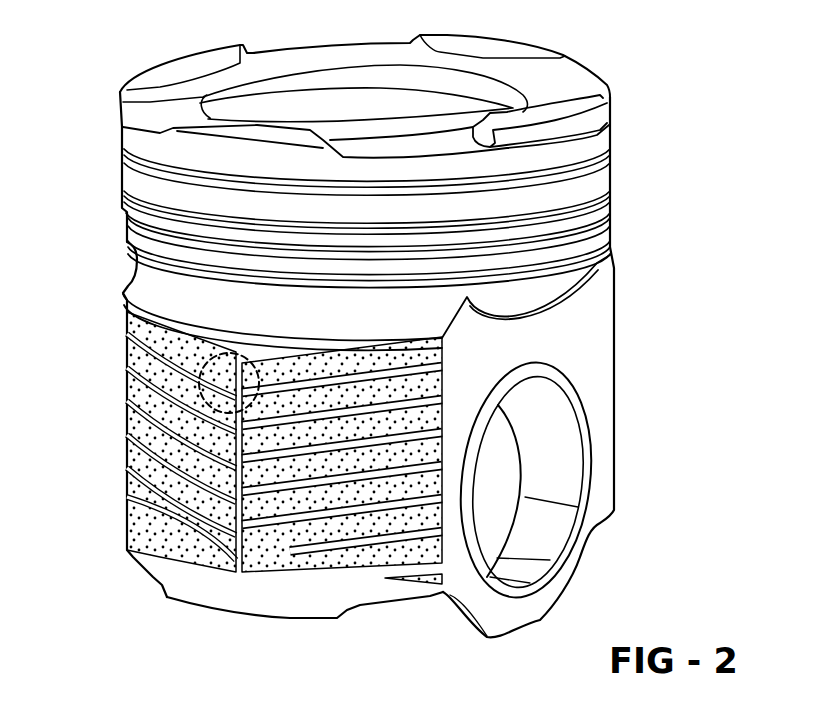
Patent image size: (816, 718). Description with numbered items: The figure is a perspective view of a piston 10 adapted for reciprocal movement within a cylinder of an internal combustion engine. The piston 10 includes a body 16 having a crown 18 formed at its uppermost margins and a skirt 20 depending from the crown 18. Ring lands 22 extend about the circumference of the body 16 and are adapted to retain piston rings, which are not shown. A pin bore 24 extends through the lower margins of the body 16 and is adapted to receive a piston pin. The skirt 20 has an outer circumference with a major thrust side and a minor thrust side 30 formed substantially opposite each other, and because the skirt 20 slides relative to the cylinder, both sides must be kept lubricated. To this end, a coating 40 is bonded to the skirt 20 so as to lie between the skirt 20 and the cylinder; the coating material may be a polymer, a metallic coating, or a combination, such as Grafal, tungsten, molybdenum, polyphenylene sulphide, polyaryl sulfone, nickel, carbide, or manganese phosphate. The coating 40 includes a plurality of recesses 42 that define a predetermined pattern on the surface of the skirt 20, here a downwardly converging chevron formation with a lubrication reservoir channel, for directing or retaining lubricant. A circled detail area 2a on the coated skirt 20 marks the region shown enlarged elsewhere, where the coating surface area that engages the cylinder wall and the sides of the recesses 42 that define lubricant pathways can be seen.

The piston 10 is at (77, 148).
The crown 18 is at (603, 50).
The ring lands 22 is at (598, 188).
The body 16 is at (680, 237).
The skirt 20 is at (623, 362).
The pin bore 24 is at (493, 487).
The minor thrust side 30 is at (225, 590).
The coating 40 is at (125, 523).
The recesses 42 is at (336, 530).
The detail area 2a is at (200, 373).